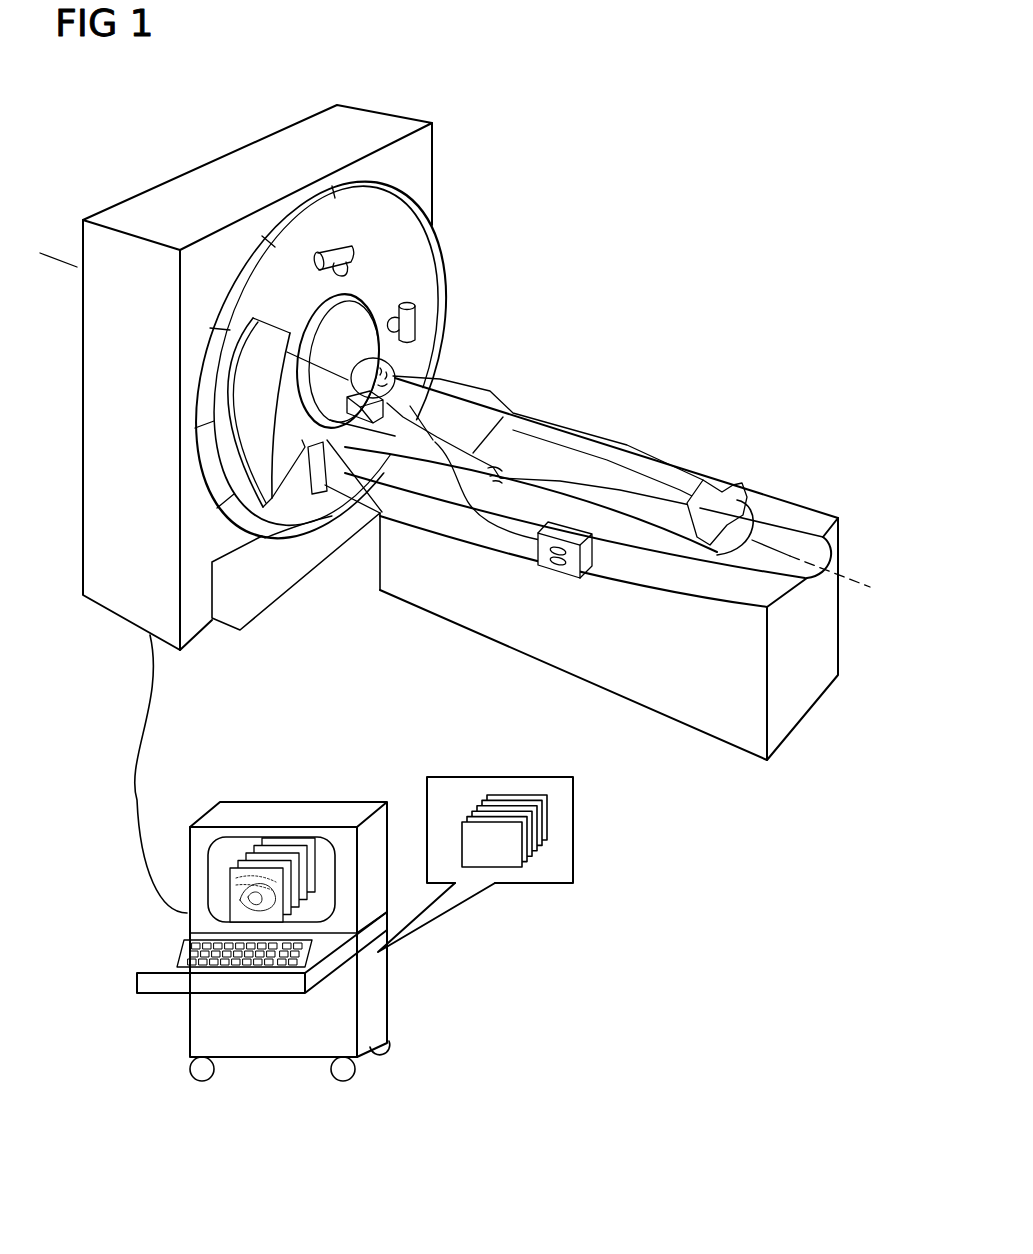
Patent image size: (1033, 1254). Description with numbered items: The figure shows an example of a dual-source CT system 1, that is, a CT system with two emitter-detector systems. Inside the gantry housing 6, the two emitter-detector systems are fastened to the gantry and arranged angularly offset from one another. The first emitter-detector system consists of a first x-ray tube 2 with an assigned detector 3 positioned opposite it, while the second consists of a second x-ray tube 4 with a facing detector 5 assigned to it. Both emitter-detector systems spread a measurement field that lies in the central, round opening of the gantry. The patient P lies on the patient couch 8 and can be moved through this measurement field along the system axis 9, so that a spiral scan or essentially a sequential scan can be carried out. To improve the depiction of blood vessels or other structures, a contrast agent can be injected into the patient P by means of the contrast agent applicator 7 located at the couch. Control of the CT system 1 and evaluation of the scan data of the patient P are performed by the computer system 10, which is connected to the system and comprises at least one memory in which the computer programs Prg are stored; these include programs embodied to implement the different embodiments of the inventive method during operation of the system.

The dual-source CT system 1 is at (612, 285).
The first x-ray tube 2 is at (417, 320).
The detector 3 is at (263, 482).
The second x-ray tube 4 is at (353, 256).
The detector 5 is at (323, 477).
The gantry housing 6 is at (110, 582).
The contrast agent applicator 7 is at (570, 577).
The patient couch 8 is at (725, 715).
The system axis 9 is at (860, 578).
The computer system 10 is at (370, 1003).
The patient P is at (447, 395).
The computer programs Prg is at (508, 867).